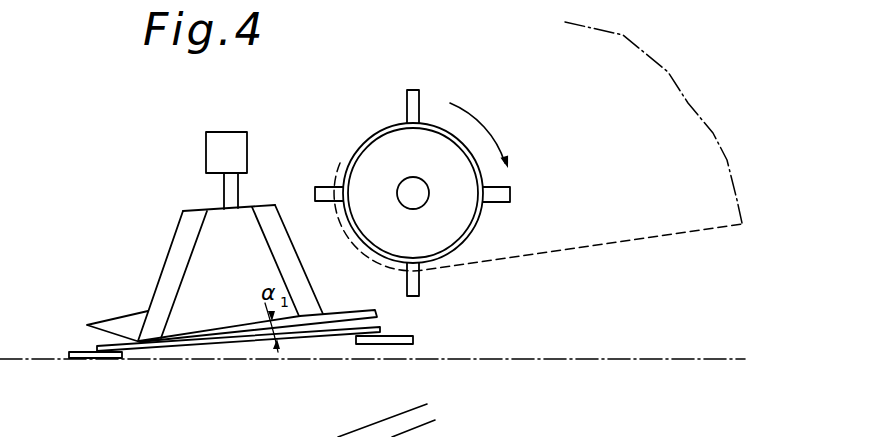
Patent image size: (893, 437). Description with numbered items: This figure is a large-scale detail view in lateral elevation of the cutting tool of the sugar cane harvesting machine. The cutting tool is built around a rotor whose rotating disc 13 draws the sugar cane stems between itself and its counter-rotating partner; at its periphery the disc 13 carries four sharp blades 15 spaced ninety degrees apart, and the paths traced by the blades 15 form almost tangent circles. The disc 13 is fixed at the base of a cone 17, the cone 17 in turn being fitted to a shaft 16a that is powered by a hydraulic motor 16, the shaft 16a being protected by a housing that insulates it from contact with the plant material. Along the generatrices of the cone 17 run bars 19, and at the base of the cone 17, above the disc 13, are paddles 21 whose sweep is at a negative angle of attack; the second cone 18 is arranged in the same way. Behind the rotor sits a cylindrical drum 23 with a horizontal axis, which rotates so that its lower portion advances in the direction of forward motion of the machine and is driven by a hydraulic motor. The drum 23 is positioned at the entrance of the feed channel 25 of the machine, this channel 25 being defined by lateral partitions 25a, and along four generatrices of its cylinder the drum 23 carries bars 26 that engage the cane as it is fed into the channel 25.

The rotating disc 13 is at (227, 345).
The sharp blades 15 is at (73, 352).
The hydraulic motor 16 is at (213, 147).
The shaft 16a is at (230, 193).
The cone 17 is at (222, 270).
The cone 18 is at (423, 198).
The bars 19 is at (312, 253).
The paddles 21 is at (303, 322).
The cylindrical drum 23 is at (438, 196).
The feed channel 25 is at (663, 142).
The lateral partitions 25a is at (663, 226).
The bars 26 is at (419, 105).